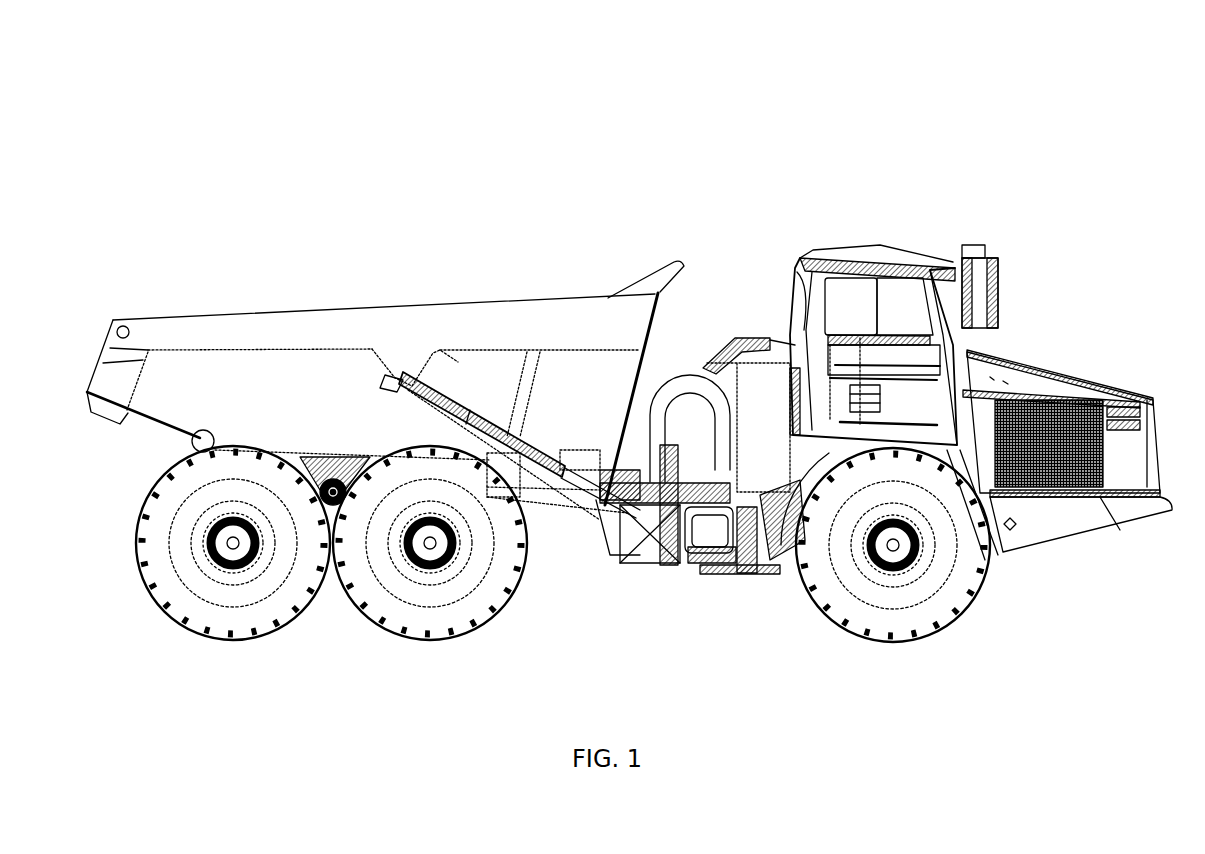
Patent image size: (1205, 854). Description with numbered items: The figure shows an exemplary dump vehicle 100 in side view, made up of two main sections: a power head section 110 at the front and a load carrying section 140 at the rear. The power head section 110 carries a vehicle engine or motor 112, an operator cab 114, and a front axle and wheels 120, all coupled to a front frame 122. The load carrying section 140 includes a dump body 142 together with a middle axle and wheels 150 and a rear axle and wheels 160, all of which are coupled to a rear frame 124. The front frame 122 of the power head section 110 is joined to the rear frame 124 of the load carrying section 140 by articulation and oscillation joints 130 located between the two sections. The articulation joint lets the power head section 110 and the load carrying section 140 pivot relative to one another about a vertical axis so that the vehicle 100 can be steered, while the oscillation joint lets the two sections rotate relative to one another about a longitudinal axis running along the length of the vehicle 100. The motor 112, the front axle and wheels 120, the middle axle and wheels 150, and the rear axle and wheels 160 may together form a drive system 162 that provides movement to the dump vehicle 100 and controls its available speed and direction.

The dump vehicle 100 is at (850, 80).
The power head section 110 is at (978, 170).
The vehicle engine or motor 112 is at (1103, 320).
The operator cab 114 is at (855, 245).
The front axle and wheels 120 is at (990, 600).
The front frame 122 is at (1078, 550).
The rear frame 124 is at (597, 563).
The articulation and oscillation joints 130 is at (718, 588).
The load carrying section 140 is at (507, 165).
The dump body 142 is at (503, 300).
The middle axle and wheels 150 is at (528, 588).
The rear axle and wheels 160 is at (125, 585).
The drive system 162 is at (908, 672).